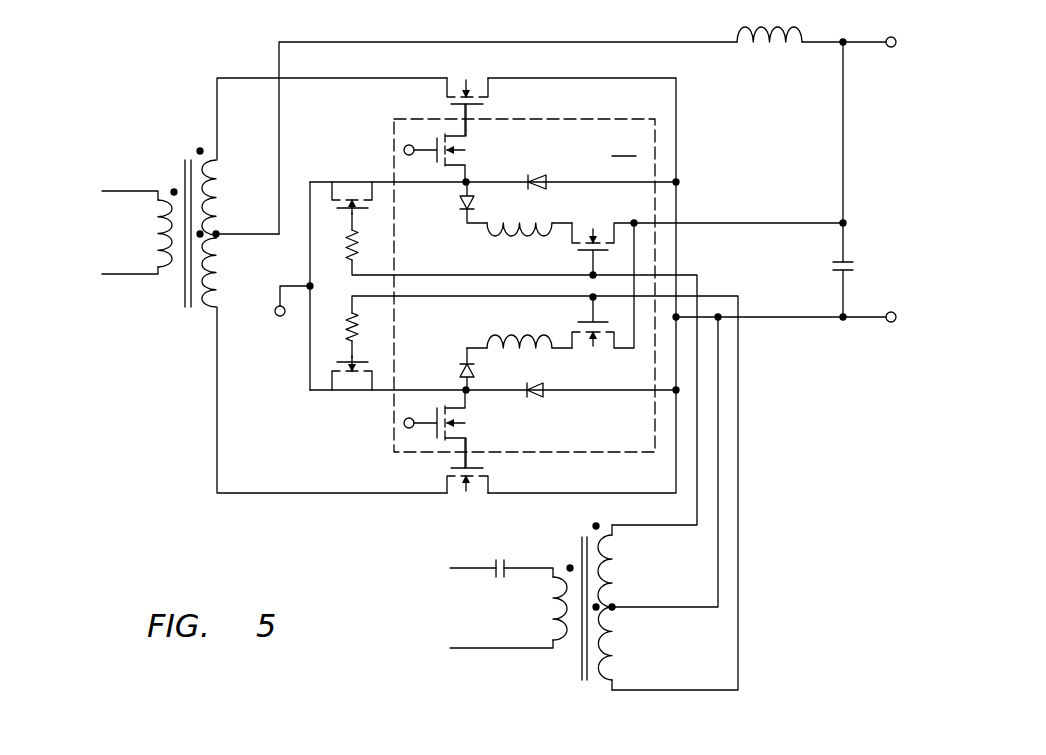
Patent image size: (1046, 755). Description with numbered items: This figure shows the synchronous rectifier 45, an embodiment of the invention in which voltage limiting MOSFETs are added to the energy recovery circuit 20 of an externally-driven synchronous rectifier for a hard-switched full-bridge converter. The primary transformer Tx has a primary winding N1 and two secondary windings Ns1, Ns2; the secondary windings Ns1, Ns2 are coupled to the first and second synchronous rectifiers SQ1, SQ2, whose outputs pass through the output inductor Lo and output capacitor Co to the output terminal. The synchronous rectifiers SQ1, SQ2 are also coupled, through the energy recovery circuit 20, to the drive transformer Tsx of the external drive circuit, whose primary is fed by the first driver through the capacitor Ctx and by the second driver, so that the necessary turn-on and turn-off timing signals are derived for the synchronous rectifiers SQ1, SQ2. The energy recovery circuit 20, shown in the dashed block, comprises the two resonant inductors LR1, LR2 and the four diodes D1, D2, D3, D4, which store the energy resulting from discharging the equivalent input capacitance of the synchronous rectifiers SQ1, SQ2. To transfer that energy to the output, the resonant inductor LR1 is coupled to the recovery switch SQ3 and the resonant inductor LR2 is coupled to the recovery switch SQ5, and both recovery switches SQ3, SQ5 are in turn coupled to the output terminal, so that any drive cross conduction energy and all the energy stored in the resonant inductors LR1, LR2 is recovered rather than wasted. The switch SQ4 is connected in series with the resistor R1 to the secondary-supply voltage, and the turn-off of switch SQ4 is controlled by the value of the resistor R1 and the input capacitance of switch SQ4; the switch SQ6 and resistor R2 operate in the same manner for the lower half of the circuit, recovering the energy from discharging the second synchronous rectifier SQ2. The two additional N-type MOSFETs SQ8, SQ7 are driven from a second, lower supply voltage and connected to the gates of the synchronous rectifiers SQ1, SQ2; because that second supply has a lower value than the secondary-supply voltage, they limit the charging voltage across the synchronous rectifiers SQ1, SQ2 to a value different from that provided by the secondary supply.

The energy recovery circuit 20 is at (554, 286).
The synchronous rectifier 45 is at (512, 347).
The first synchronous rectifier SQ1 is at (467, 95).
The second synchronous rectifier SQ2 is at (467, 481).
The recovery switch SQ3 is at (603, 237).
The switch SQ4 is at (352, 195).
The recovery switch SQ5 is at (603, 296).
The switch SQ6 is at (352, 381).
The N-type MOSFET SQ7 is at (457, 429).
The N-type MOSFET SQ8 is at (457, 143).
The diode D1 is at (535, 197).
The diode D2 is at (460, 202).
The diode D3 is at (535, 380).
The diode D4 is at (454, 369).
The resonant inductor LR1 is at (519, 245).
The resonant inductor LR2 is at (519, 331).
The resistor R1 is at (342, 245).
The resistor R2 is at (342, 327).
The output inductor Lo is at (769, 23).
The output capacitor Co is at (828, 268).
The primary transformer Tx is at (178, 214).
The primary winding N1 is at (152, 233).
The secondary winding Ns1 is at (228, 197).
The secondary winding Ns2 is at (228, 272).
The drive transformer Tsx is at (532, 599).
The drive coupling capacitor Ctx is at (501, 555).